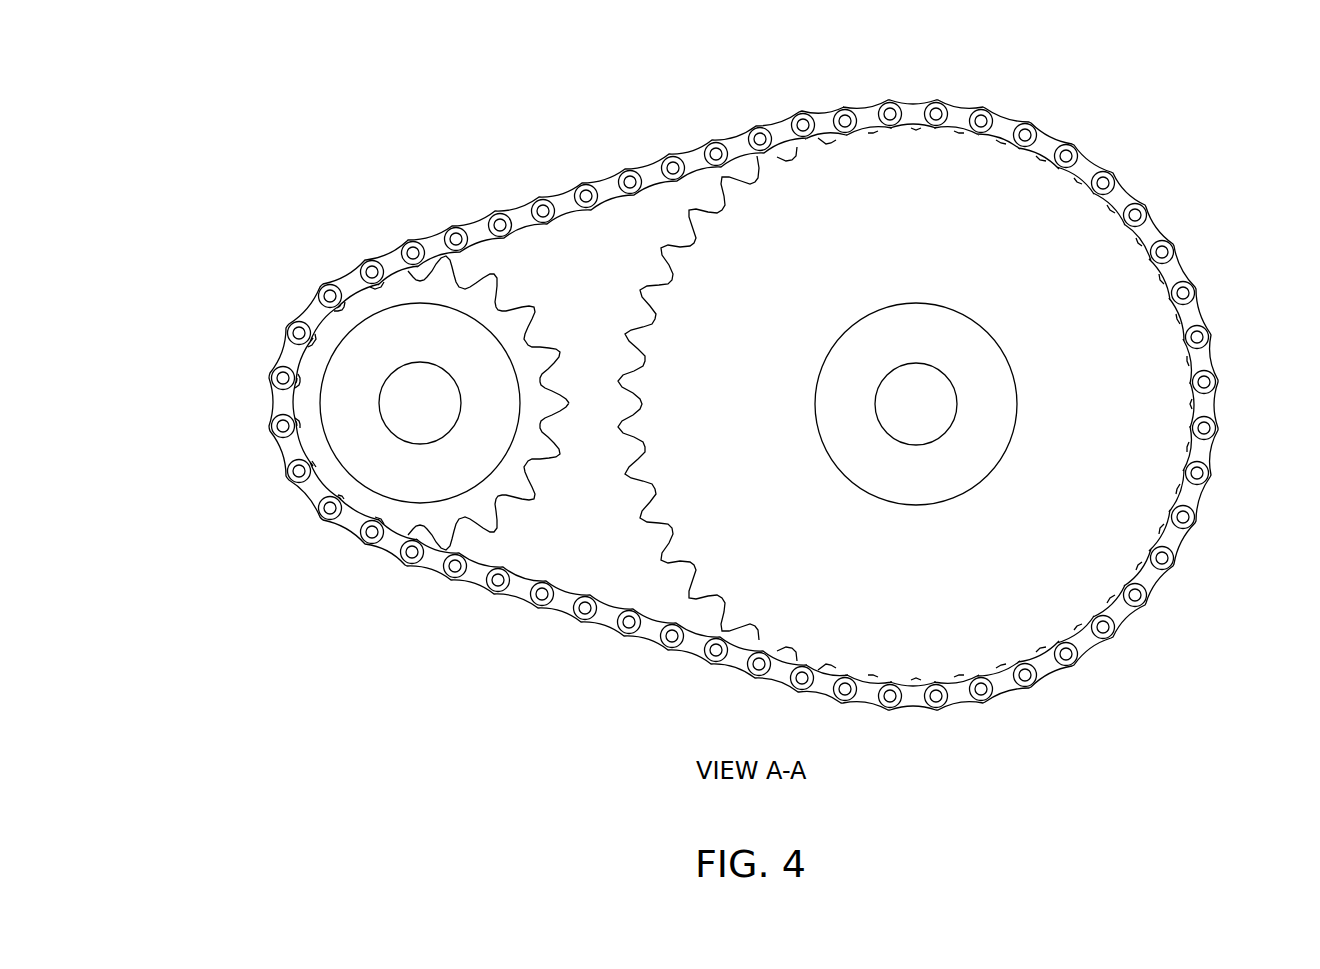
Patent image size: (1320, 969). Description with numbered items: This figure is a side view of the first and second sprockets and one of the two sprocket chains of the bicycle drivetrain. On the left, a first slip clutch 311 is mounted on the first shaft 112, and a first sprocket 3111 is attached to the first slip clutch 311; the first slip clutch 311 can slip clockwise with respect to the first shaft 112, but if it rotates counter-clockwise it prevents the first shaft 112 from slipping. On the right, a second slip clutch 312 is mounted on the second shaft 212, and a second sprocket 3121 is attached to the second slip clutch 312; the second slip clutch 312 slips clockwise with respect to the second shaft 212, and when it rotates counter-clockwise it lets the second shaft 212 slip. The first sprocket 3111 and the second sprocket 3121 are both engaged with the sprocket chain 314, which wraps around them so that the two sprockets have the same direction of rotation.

The first shaft 112 is at (410, 401).
The second shaft 212 is at (922, 403).
The first slip clutch 311 is at (416, 485).
The first sprocket 3111 is at (478, 503).
The second slip clutch 312 is at (933, 485).
The second sprocket 3121 is at (1020, 220).
The sprocket chain 314 is at (655, 171).